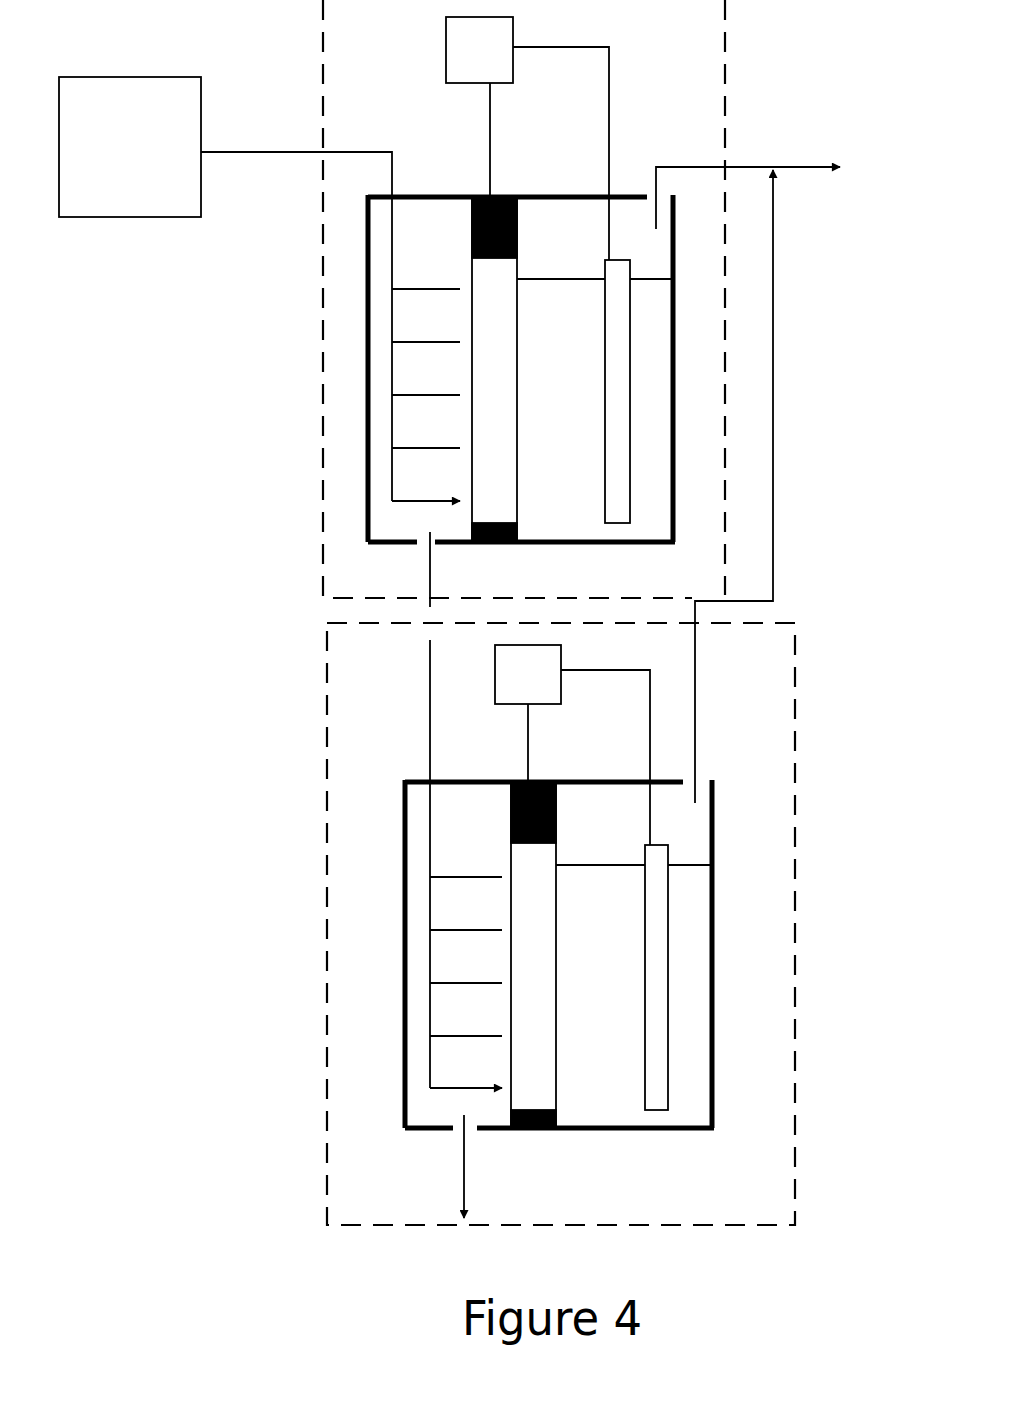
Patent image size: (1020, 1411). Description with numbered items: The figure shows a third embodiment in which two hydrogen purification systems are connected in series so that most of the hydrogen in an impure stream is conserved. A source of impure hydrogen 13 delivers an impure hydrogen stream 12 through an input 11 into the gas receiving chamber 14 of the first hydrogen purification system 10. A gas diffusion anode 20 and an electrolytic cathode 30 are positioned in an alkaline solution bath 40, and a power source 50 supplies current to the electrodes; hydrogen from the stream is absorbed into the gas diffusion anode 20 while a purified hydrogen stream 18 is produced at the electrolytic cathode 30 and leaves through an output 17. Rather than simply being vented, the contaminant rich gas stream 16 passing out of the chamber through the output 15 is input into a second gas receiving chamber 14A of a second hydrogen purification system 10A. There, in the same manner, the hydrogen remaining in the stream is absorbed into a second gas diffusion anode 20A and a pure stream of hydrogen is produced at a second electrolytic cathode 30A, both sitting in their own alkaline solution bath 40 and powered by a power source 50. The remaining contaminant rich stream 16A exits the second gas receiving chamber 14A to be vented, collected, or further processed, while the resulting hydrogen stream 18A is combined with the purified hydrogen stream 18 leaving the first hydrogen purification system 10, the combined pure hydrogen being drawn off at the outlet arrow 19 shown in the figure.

The hydrogen purification system 10 is at (342, 238).
The second hydrogen purification system 10A is at (340, 843).
The input 11 is at (395, 190).
The impure hydrogen stream 12 is at (296, 310).
The source of impure hydrogen 13 is at (130, 147).
The gas receiving chamber 14 is at (426, 361).
The second gas receiving chamber 14A is at (466, 954).
The output 15 is at (433, 545).
The contaminant rich gas stream 16 is at (411, 810).
The contaminant rich stream 16A is at (493, 1166).
The output 17 is at (650, 190).
The purified hydrogen stream 18 is at (738, 151).
The hydrogen stream 18A is at (765, 486).
The discharge 19 is at (828, 151).
The gas diffusion anode 20 is at (497, 470).
The gas diffusion anode 20A is at (538, 1040).
The electrolytic cathode 30 is at (615, 490).
The electrolytic cathode 30A is at (657, 1058).
The alkaline solution bath 40 is at (614, 622).
The power source 50 is at (548, 431).